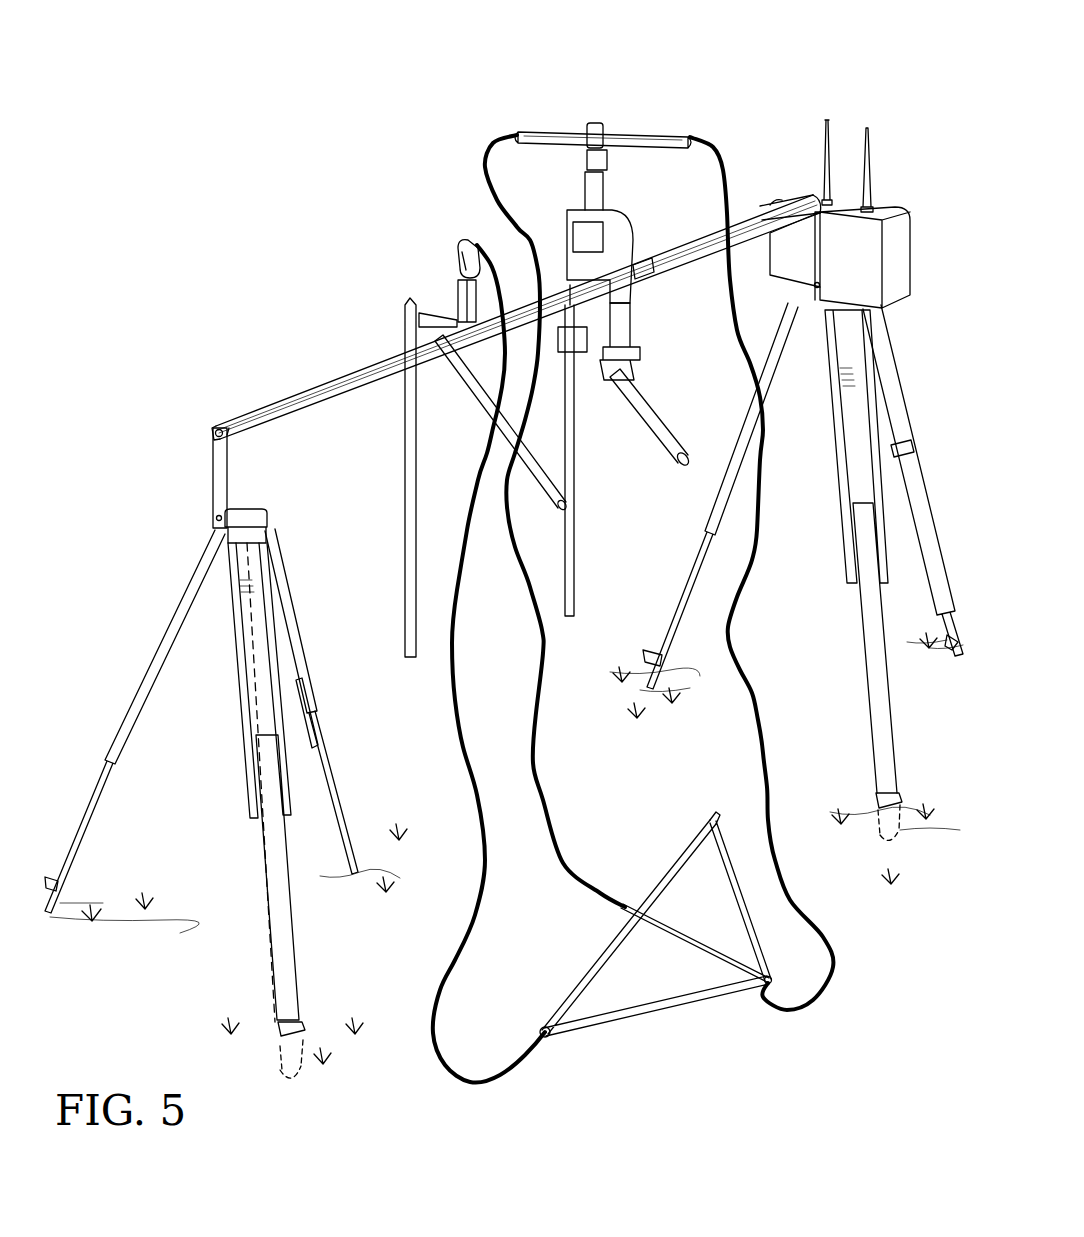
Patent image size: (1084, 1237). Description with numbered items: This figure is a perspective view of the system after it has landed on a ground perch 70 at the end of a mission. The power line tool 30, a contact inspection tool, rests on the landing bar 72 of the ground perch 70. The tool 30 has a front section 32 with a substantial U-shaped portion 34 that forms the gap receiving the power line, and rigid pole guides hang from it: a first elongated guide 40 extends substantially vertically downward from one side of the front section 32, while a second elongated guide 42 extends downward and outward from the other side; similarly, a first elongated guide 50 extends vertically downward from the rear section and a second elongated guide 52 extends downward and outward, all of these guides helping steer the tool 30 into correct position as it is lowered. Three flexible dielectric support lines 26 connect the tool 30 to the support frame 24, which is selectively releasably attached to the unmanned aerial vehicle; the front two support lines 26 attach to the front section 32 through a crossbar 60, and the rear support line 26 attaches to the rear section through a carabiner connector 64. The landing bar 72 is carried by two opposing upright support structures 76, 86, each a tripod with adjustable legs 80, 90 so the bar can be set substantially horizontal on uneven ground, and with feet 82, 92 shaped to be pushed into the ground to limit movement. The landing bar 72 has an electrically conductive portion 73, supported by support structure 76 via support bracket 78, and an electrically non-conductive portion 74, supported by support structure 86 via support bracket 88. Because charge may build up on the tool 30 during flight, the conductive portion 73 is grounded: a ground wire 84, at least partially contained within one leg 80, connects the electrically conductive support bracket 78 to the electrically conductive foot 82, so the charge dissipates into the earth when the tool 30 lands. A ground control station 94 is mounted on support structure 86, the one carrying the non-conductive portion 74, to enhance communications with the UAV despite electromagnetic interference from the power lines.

The support frame 24 is at (673, 1010).
The flexible dielectric support lines 26 is at (846, 955).
The power line tool 30 is at (640, 86).
The front section 32 is at (633, 232).
The U-shaped portion 34 is at (622, 333).
The first elongated guide 40 is at (571, 568).
The second elongated guide 42 is at (662, 427).
The first elongated guide 50 is at (404, 608).
The second elongated guide 52 is at (462, 382).
The crossbar 60 is at (533, 132).
The carabiner connector 64 is at (455, 257).
The ground perch 70 is at (183, 398).
The landing bar 72 is at (360, 352).
The electrically conductive portion 73 is at (288, 400).
The electrically non-conductive portion 74 is at (756, 218).
The upright support structure 76 is at (150, 612).
The support bracket 78 is at (224, 468).
The adjustable legs 80 is at (198, 565).
The foot 82 is at (300, 1072).
The ground wire 84 is at (290, 918).
The upright support structure 86 is at (900, 364).
The support bracket 88 is at (817, 248).
The adjustable legs 90 is at (930, 534).
The foot 92 is at (880, 838).
The ground control station 94 is at (890, 217).